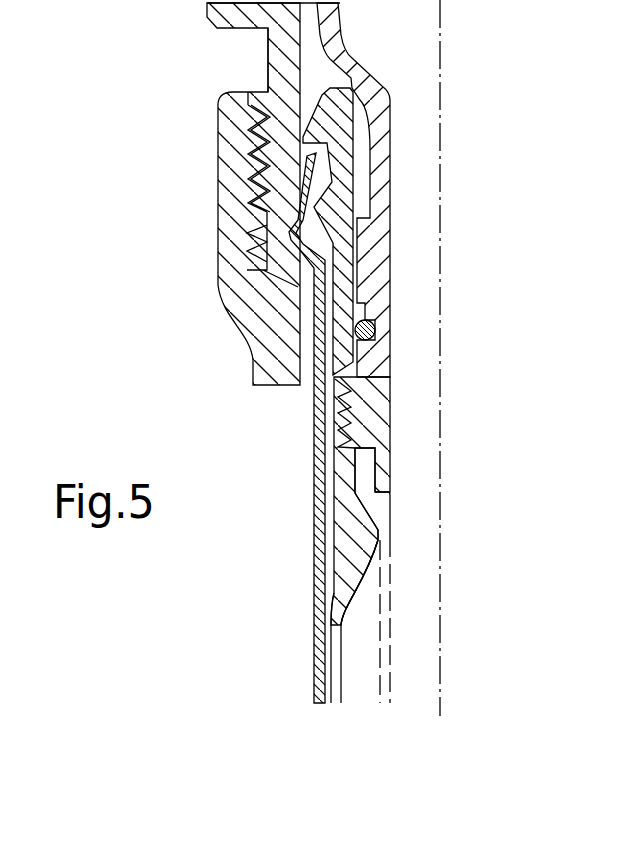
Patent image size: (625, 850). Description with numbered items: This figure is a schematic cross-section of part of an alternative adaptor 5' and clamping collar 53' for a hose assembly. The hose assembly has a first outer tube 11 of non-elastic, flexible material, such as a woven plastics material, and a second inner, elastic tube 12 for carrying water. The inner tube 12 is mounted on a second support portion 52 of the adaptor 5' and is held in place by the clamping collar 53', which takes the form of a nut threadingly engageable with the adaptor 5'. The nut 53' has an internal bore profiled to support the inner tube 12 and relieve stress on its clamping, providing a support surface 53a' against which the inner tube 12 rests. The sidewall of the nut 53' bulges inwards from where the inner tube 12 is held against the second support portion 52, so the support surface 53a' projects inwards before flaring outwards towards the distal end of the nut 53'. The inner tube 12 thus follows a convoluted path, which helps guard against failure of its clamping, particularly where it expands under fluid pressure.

The alternative adaptor 5' is at (407, 501).
The first outer tube 11 is at (318, 430).
The second inner elastic tube 12 is at (337, 622).
The second support portion 52 is at (380, 468).
The clamping collar 53' is at (312, 579).
The support surface 53a' is at (433, 597).